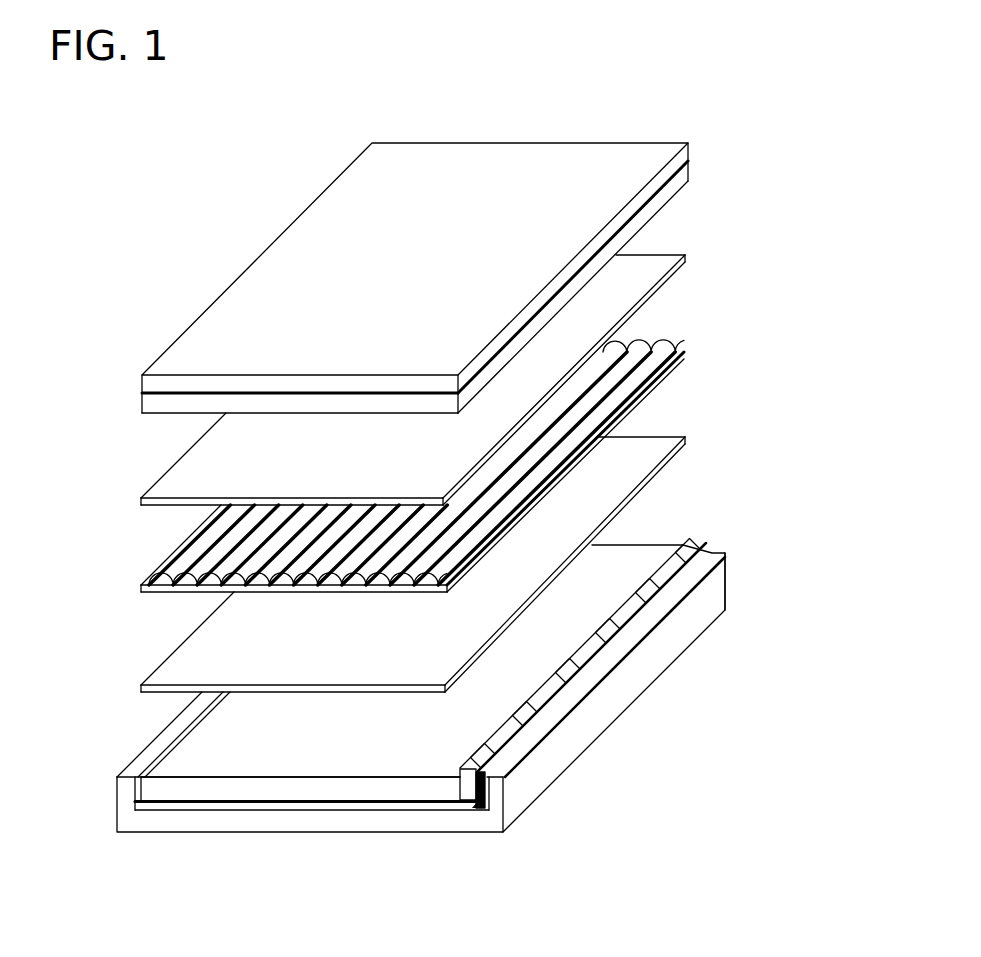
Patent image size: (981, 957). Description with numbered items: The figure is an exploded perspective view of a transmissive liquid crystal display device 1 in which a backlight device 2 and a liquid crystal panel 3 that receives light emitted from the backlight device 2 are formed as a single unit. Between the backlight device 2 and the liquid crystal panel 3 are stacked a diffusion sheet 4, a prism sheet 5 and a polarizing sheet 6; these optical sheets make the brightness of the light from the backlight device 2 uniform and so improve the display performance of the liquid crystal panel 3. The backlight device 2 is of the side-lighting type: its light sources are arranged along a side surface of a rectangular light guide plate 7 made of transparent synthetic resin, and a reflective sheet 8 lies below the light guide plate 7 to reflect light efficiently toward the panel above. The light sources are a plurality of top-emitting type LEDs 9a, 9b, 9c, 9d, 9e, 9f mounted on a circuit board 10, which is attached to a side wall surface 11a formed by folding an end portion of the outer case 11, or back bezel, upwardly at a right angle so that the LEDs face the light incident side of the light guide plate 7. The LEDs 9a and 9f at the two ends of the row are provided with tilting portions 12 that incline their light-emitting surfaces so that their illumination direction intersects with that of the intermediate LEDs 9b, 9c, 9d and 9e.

The liquid crystal display device 1 is at (232, 232).
The backlight device 2 is at (662, 525).
The liquid crystal panel 3 is at (213, 362).
The diffusion sheet 4 is at (200, 657).
The prism sheet 5 is at (195, 548).
The polarizing sheet 6 is at (205, 472).
The light guide plate 7 is at (205, 740).
The reflective sheet 8 is at (130, 797).
The top-emitting type LED 9a is at (463, 790).
The top-emitting type LED 9b is at (558, 720).
The top-emitting type LED 9c is at (598, 683).
The top-emitting type LED 9d is at (640, 643).
The top-emitting type LED 9e is at (678, 610).
The top-emitting type LED 9f is at (690, 547).
The circuit board 10 is at (717, 547).
The outer case 11 is at (200, 828).
The side wall surface 11a is at (540, 768).
The tilting portion 12 is at (706, 541).